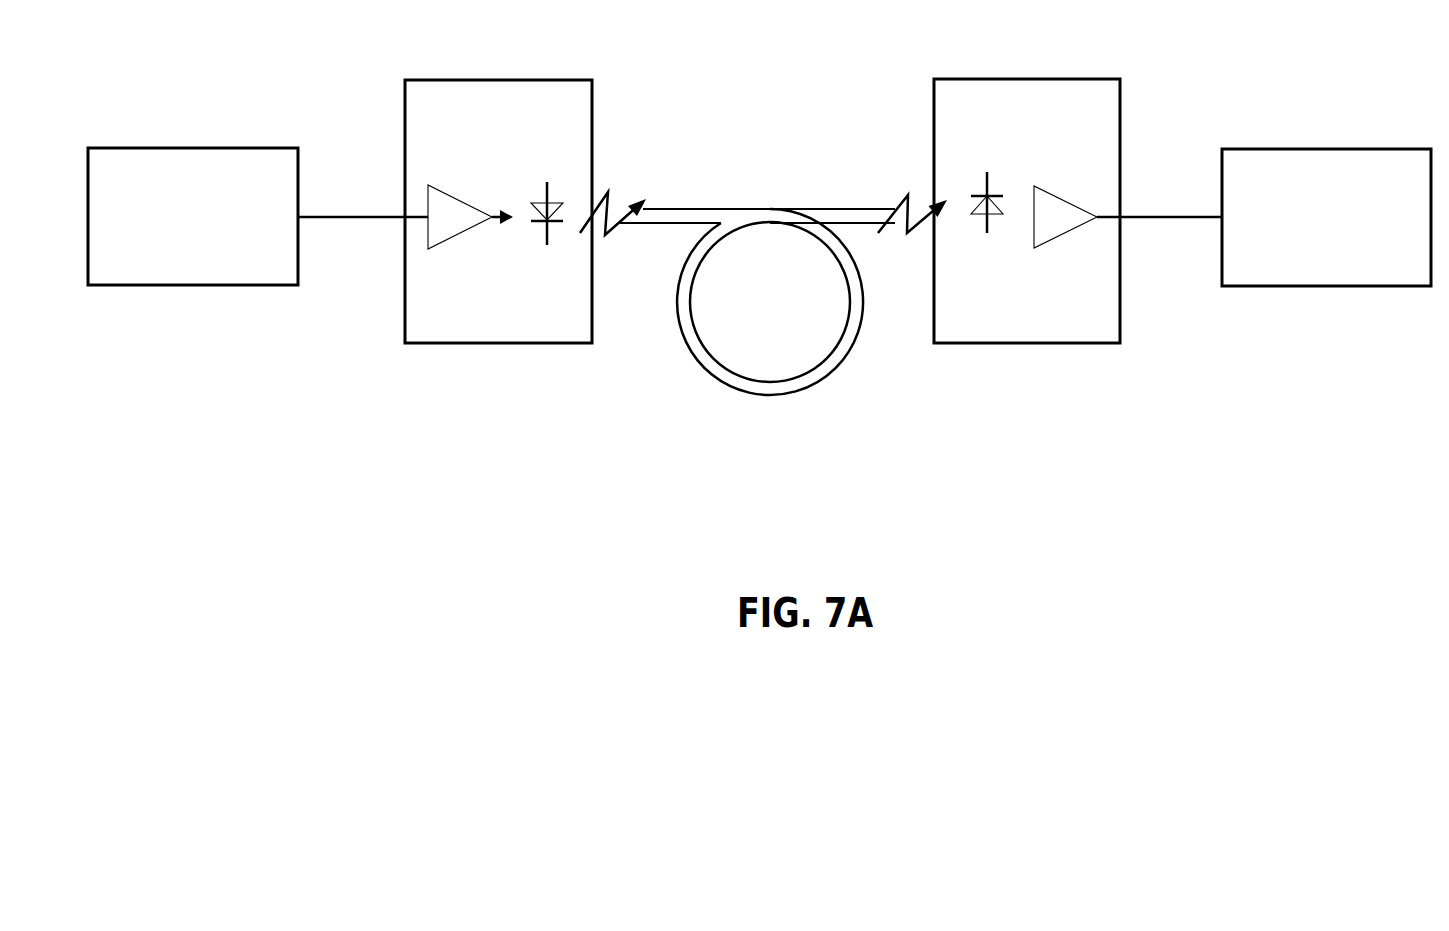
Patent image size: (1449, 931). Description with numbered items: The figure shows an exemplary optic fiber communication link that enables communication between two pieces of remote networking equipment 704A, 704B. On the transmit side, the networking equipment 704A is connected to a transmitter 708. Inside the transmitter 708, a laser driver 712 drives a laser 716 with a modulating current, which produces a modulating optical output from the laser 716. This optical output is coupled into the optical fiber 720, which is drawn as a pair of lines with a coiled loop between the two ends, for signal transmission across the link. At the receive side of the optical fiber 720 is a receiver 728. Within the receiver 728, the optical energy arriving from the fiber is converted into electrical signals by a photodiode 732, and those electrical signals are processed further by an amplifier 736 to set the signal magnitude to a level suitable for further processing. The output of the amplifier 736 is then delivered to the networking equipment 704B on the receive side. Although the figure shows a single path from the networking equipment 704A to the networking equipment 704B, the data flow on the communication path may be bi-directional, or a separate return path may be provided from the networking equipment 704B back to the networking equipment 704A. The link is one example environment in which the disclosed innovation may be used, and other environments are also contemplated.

The networking equipment 704A is at (175, 148).
The networking equipment 704B is at (1318, 149).
The transmitter 708 is at (405, 105).
The laser driver 712 is at (450, 230).
The laser 716 is at (535, 208).
The optical fiber 720 is at (758, 210).
The receiver 728 is at (934, 105).
The photodiode 732 is at (979, 208).
The amplifier 736 is at (1068, 223).